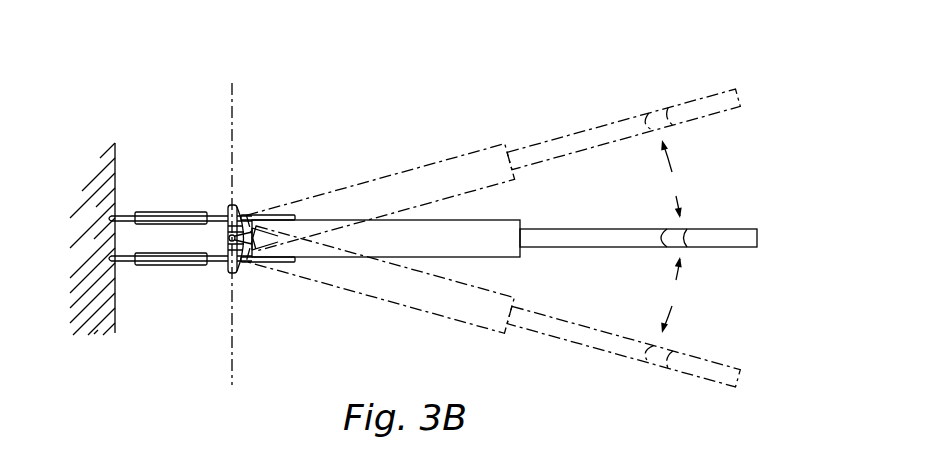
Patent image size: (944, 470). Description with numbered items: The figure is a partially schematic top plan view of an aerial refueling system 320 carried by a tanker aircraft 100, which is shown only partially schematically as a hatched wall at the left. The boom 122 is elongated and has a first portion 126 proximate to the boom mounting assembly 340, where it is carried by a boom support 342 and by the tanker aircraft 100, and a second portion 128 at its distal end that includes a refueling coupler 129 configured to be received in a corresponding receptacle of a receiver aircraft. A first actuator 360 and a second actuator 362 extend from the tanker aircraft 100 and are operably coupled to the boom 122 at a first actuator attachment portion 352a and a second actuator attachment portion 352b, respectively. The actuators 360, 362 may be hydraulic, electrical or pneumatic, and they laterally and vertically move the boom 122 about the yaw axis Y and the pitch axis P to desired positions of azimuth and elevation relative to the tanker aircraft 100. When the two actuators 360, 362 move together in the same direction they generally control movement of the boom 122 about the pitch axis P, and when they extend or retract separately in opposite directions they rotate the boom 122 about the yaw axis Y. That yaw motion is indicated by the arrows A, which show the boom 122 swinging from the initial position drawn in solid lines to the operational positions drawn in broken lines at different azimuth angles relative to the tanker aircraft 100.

The aerial refueling system 320 is at (491, 76).
The tanker aircraft 100 is at (92, 246).
The boom mounting assembly 340 is at (214, 334).
The boom support 342 is at (247, 202).
The first actuator attachment portion 352a is at (291, 266).
The second actuator attachment portion 352b is at (296, 206).
The first actuator 360 is at (157, 262).
The second actuator 362 is at (190, 215).
The first portion of the boom 126 is at (325, 212).
The boom 122 is at (504, 248).
The second portion of the boom 128 is at (720, 216).
The refueling coupler 129 is at (766, 242).
The pitch axis P is at (231, 96).
The yaw axis Y is at (229, 245).
The arrows indicating yaw movement A is at (671, 236).